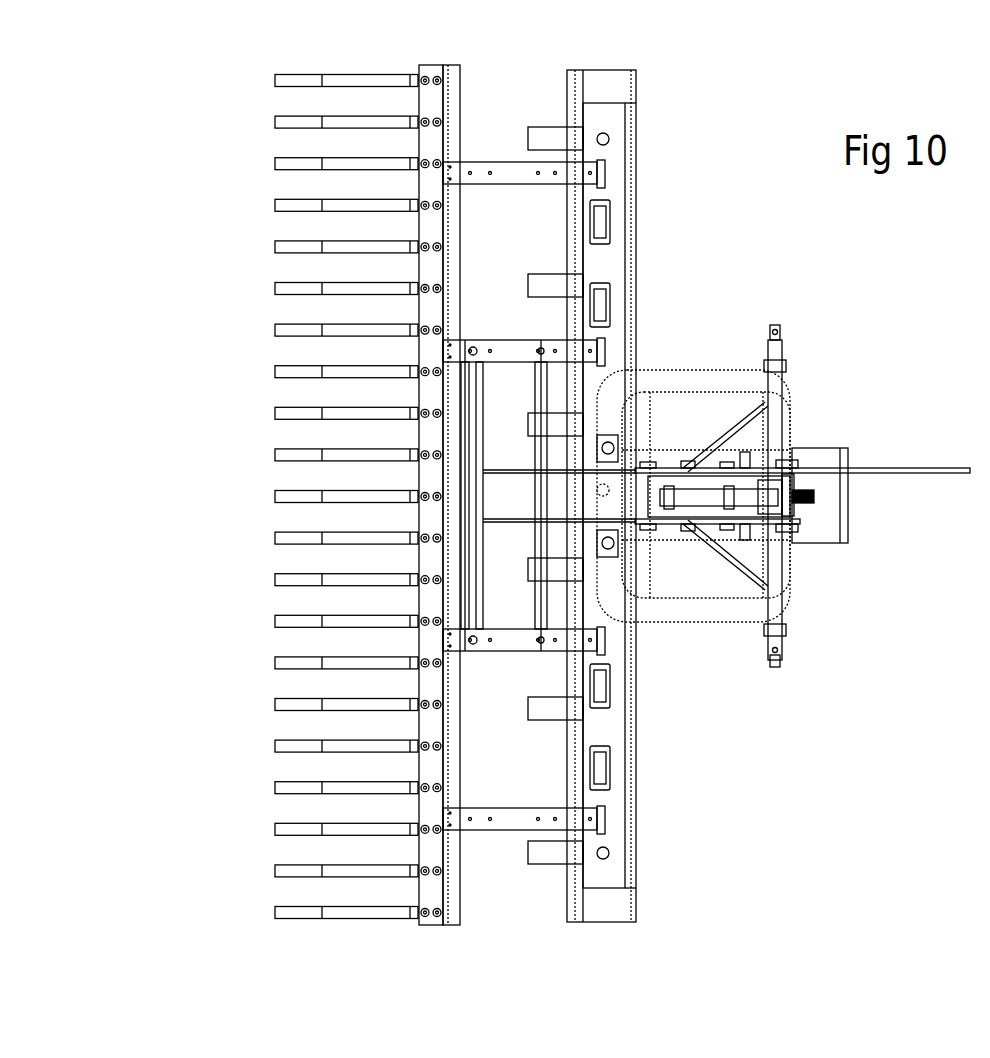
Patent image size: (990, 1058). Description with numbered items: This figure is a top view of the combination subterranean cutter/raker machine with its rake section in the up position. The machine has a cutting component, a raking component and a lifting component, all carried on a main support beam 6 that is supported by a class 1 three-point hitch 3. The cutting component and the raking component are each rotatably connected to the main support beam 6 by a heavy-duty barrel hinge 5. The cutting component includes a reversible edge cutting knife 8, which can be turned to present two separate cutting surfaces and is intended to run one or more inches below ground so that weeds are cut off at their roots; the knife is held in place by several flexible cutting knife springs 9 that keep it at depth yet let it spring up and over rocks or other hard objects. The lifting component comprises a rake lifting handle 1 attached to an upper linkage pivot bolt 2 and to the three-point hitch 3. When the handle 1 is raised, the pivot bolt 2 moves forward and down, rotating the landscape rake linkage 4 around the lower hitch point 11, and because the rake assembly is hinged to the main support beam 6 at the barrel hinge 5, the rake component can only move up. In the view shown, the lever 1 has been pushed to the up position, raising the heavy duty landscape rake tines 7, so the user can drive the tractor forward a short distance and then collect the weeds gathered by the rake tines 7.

The rake lifting handle 1 is at (950, 470).
The upper linkage pivot bolt 2 is at (788, 466).
The class 1 three-point hitch 3 is at (718, 370).
The landscape rake linkage 4 is at (655, 468).
The heavy-duty barrel hinge 5 is at (598, 684).
The main support beam 6 is at (615, 738).
The heavy duty landscape rake tines 7 is at (276, 246).
The reversible edge cutting knife 8 is at (602, 910).
The cutting knife springs 9 is at (542, 855).
The lower hitch point 11 is at (845, 589).